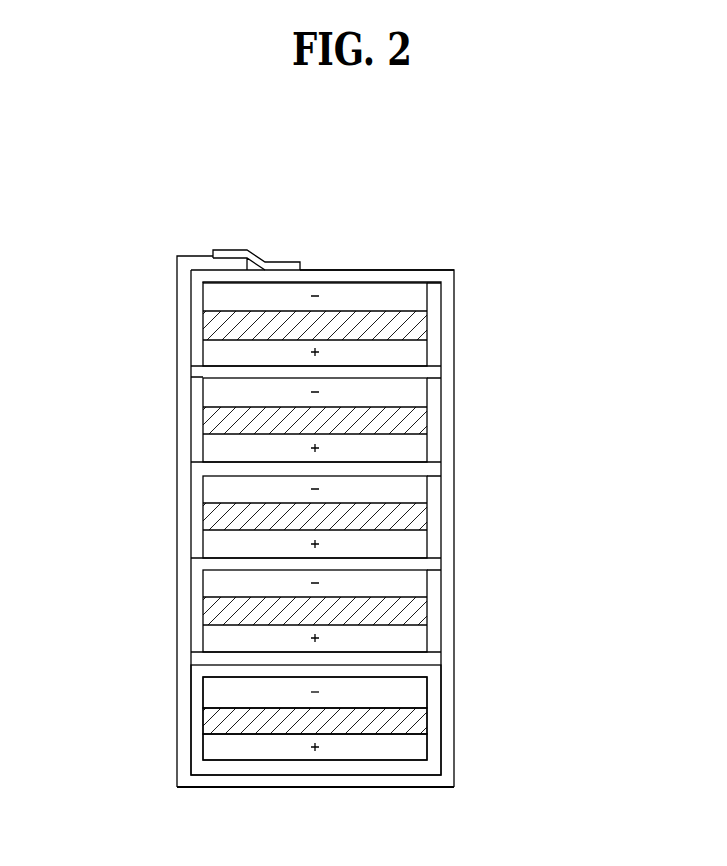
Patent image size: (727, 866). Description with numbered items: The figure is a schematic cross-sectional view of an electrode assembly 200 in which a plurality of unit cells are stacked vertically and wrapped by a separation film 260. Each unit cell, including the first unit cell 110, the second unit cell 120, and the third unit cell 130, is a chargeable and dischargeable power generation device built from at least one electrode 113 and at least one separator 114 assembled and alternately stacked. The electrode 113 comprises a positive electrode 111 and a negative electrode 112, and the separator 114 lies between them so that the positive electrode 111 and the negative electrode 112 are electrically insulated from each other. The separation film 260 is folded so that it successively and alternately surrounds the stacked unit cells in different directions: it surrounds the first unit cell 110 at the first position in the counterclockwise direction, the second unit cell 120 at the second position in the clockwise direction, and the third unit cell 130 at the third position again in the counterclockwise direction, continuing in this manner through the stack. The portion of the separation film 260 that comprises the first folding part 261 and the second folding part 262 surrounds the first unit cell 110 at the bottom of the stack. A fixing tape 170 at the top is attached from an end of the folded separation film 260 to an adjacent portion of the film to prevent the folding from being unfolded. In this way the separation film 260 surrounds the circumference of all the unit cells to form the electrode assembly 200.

The electrode assembly 200 is at (562, 193).
The first unit cell 110 is at (289, 748).
The positive electrode 111 is at (207, 749).
The negative electrode 112 is at (207, 689).
The electrode 113 is at (251, 754).
The separator 114 is at (242, 722).
The second unit cell 120 is at (433, 607).
The third unit cell 130 is at (433, 502).
The fixing tape 170 is at (262, 258).
The separation film 260 is at (457, 548).
The first folding part 261 is at (442, 674).
The second folding part 262 is at (318, 788).